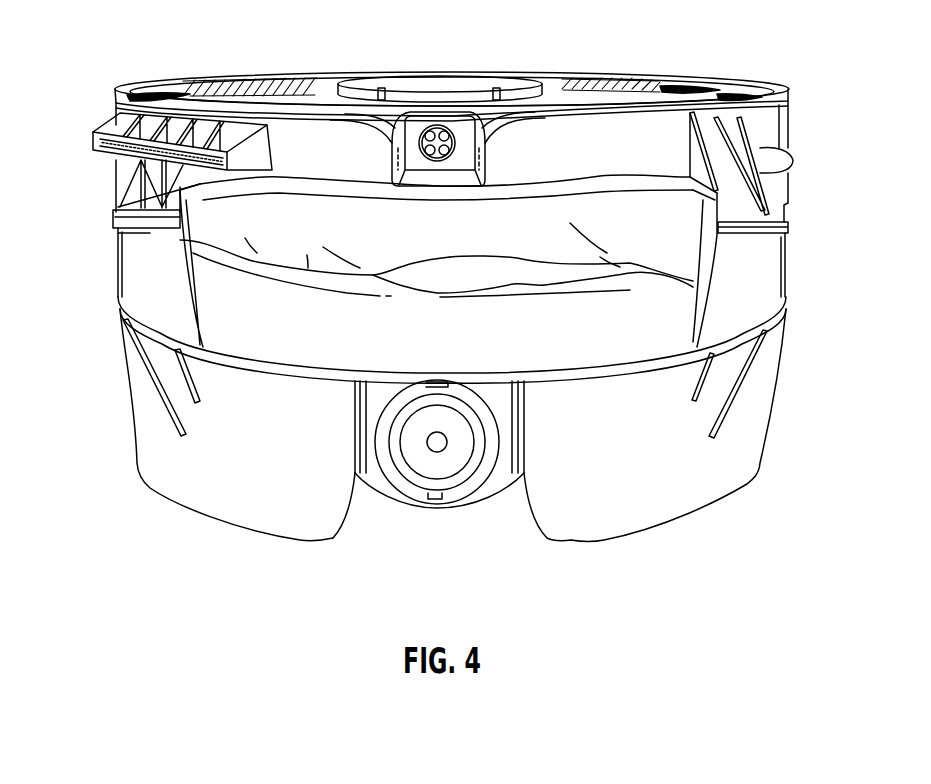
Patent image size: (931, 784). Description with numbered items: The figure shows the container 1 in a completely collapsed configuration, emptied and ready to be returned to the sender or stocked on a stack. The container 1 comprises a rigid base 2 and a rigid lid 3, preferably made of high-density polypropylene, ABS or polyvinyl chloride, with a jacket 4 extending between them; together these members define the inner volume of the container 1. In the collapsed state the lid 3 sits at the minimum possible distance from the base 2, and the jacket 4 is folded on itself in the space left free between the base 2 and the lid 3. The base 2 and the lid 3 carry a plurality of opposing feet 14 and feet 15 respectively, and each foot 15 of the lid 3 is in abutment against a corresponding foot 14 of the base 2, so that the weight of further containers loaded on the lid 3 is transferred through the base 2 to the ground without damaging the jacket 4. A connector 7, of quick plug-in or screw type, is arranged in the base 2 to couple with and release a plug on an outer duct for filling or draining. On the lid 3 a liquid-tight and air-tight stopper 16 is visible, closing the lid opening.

The container 1 is at (285, 618).
The base 2 is at (234, 513).
The lid 3 is at (137, 91).
The jacket 4 is at (643, 229).
The connector 7 is at (435, 460).
The feet 14 is at (152, 300).
The feet 15 is at (137, 210).
The stopper 16 is at (430, 82).